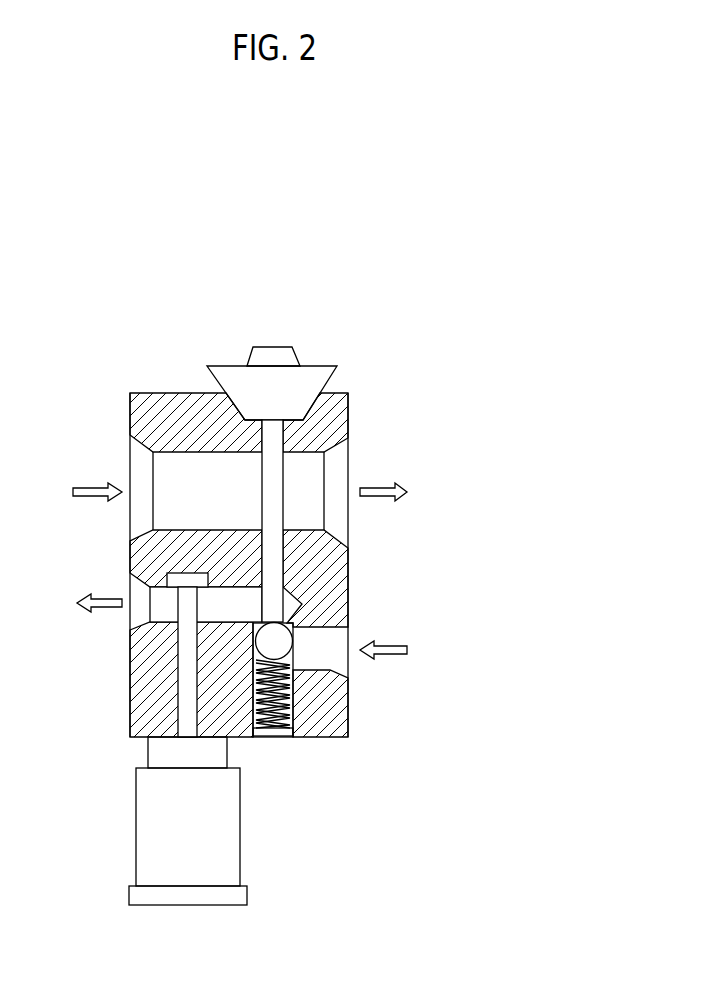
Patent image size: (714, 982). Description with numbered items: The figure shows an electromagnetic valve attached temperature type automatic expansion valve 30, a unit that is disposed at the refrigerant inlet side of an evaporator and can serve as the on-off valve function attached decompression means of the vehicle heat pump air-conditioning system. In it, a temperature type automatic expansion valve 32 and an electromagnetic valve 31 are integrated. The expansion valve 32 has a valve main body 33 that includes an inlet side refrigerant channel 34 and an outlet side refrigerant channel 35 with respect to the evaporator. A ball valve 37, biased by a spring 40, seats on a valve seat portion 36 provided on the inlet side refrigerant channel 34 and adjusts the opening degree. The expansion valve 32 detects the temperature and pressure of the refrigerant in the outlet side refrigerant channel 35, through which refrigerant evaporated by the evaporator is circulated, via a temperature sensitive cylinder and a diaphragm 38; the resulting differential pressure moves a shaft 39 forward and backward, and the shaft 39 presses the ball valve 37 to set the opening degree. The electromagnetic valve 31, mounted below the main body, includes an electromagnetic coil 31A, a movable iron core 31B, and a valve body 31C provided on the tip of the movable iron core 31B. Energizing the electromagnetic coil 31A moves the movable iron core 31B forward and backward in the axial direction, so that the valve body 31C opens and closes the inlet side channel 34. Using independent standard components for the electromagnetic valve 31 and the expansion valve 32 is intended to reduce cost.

The electromagnetic valve attached temperature type automatic expansion valve 30 is at (410, 365).
The diaphragm 38 is at (230, 378).
The outlet side refrigerant channel 35 is at (158, 468).
The shaft 39 is at (272, 482).
The inlet side refrigerant channel 34 is at (228, 580).
The valve main body 33 is at (150, 556).
The valve seat portion 36 is at (313, 607).
The ball valve 37 is at (275, 641).
The spring 40 is at (284, 730).
The temperature type automatic expansion valve 32 is at (380, 690).
The electromagnetic valve 31 is at (106, 800).
The electromagnetic coil 31A is at (220, 833).
The movable iron core 31B is at (188, 687).
The valve body 31C is at (187, 606).